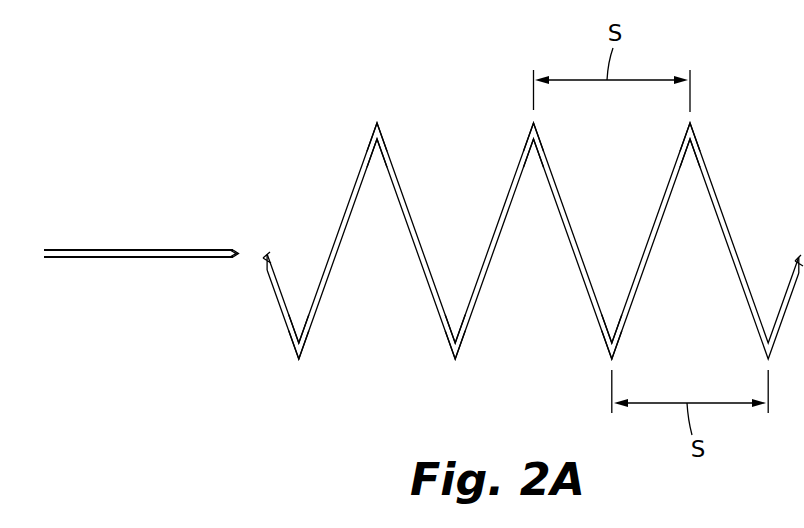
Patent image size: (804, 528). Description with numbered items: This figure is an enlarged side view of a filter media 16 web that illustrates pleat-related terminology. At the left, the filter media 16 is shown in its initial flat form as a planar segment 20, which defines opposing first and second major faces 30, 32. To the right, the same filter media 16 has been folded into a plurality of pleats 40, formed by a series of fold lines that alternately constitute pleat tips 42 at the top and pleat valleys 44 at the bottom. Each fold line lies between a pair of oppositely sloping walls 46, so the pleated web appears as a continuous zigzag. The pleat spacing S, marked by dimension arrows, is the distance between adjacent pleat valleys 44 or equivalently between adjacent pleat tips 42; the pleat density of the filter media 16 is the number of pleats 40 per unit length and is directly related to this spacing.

The filter media 16 is at (120, 228).
The planar segment 20 is at (119, 280).
The first major face 30 is at (172, 250).
The second major face 32 is at (176, 258).
The pleats 40 is at (475, 358).
The pleat tips 42 is at (378, 122).
The pleat valleys 44 is at (299, 360).
The oppositely sloping walls 46 is at (483, 258).